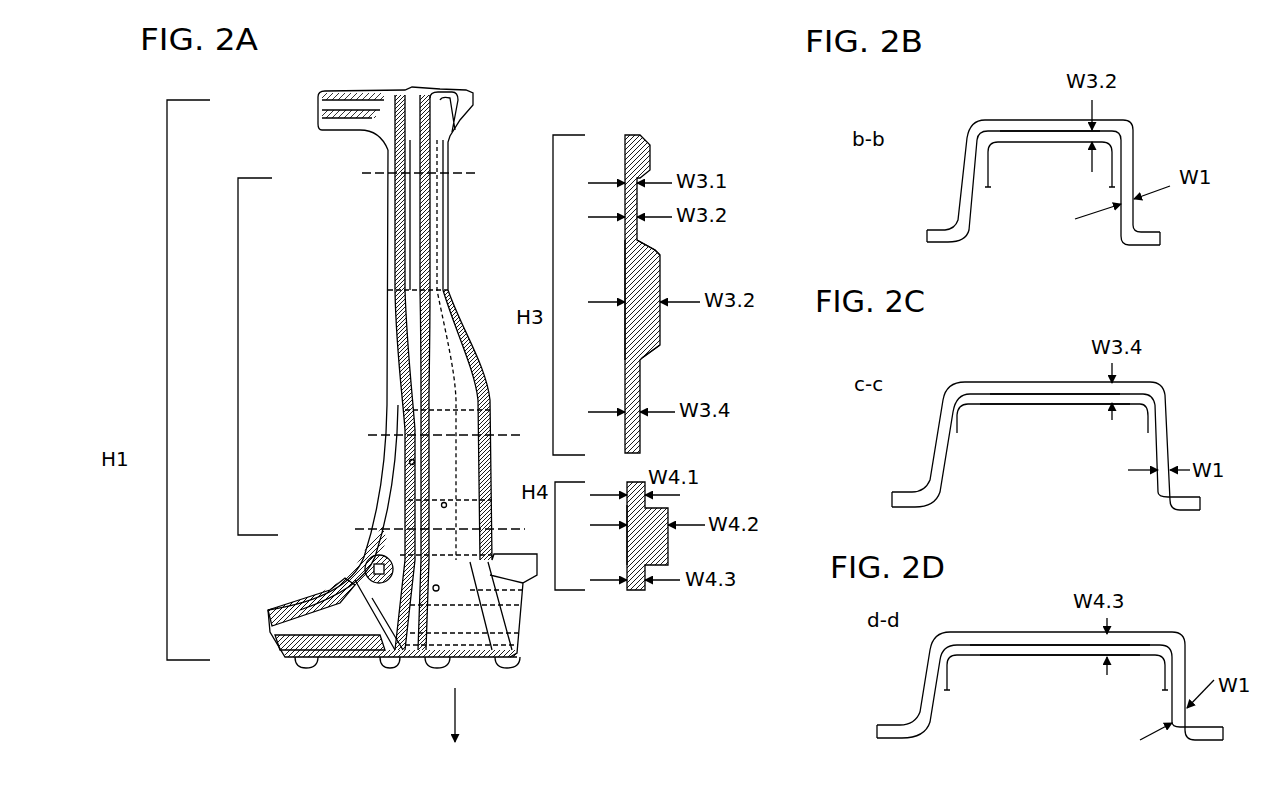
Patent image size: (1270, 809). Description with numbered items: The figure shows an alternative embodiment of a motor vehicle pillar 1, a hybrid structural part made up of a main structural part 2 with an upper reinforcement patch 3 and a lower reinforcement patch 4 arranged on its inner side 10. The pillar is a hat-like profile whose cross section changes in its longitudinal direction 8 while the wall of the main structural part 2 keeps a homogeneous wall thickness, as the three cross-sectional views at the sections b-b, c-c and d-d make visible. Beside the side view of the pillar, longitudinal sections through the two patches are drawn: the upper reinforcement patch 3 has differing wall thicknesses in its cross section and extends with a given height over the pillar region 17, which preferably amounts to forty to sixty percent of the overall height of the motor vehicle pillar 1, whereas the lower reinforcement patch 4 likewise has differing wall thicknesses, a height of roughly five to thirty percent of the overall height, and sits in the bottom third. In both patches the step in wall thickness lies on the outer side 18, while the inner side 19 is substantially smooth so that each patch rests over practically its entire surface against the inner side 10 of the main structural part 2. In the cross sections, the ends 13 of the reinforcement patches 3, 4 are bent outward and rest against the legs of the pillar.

In FIG. 2A, the motor vehicle pillar 1 is at (523, 132).
In FIG. 2B, the main structural part 2 is at (1127, 152).
In FIG. 2C, the main structural part 2 is at (1160, 396).
In FIG. 2D, the main structural part 2 is at (1170, 634).
In FIG. 2A, the upper reinforcement patch 3 is at (668, 292).
In FIG. 2B, the upper reinforcement patch 3 is at (1046, 137).
In FIG. 2C, the upper reinforcement patch 3 is at (1040, 405).
In FIG. 2A, the lower reinforcement patch 4 is at (680, 510).
In FIG. 2D, the lower reinforcement patch 4 is at (1030, 657).
In FIG. 2A, the longitudinal direction 8 is at (464, 715).
In FIG. 2B, the inner side 10 is at (1070, 132).
In FIG. 2C, the inner side 10 is at (1080, 396).
In FIG. 2D, the inner side 10 is at (992, 649).
In FIG. 2B, the ends 13 is at (1110, 184).
In FIG. 2D, the ends 13 is at (950, 692).
In FIG. 2A, the pillar region 17 is at (238, 408).
In FIG. 2A, the outer side 18 is at (650, 246).
In FIG. 2A, the inner side 19 is at (630, 250).
In FIG. 2C, the inner side 19 is at (1007, 393).
In FIG. 2D, the inner side 19 is at (982, 645).